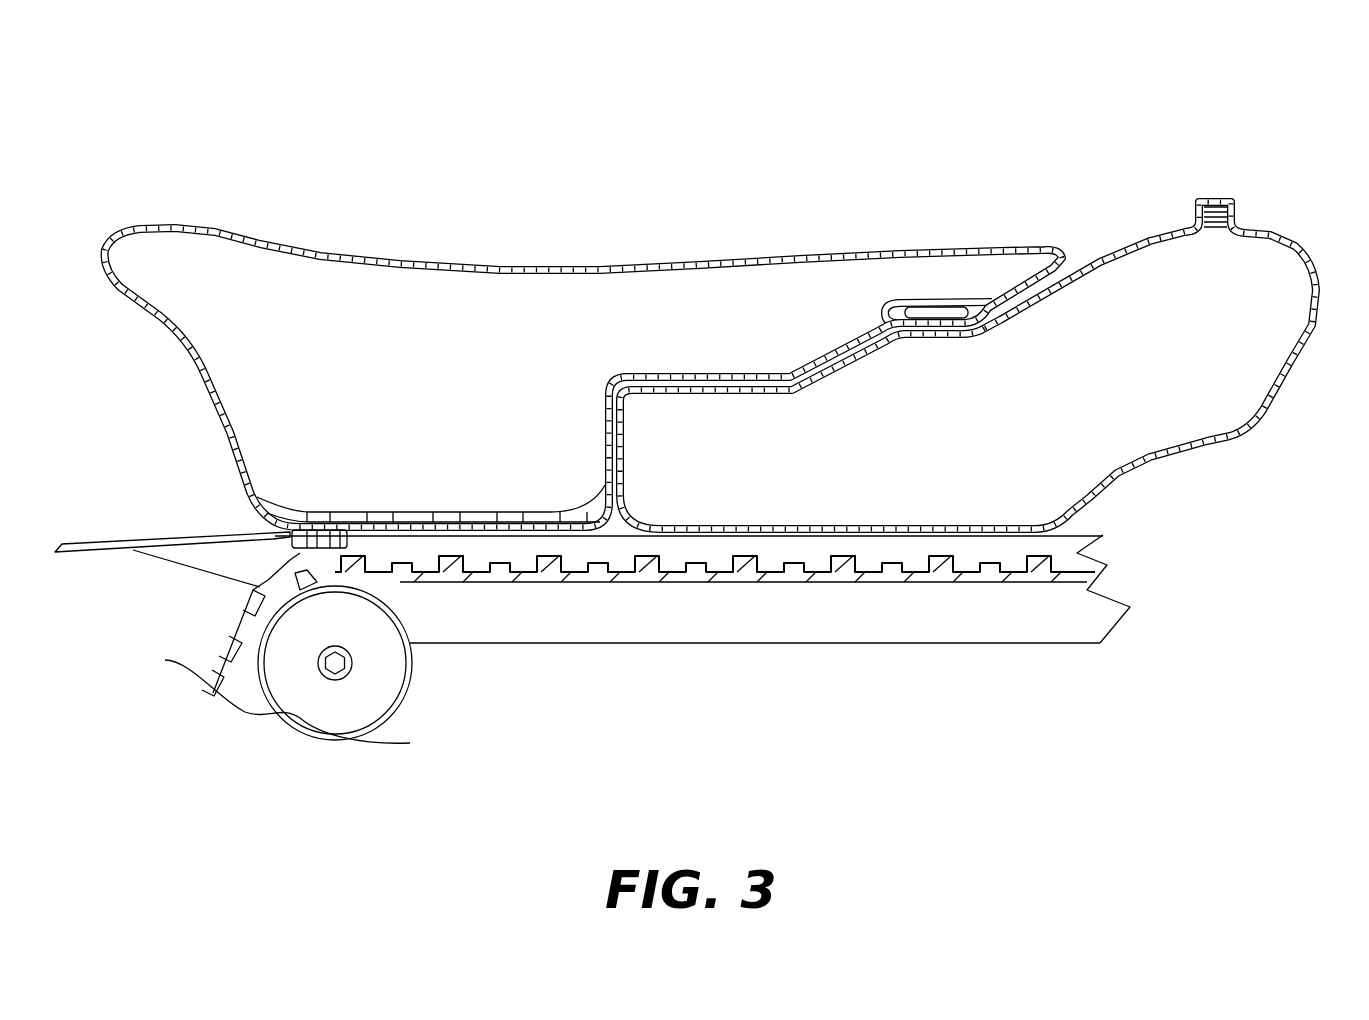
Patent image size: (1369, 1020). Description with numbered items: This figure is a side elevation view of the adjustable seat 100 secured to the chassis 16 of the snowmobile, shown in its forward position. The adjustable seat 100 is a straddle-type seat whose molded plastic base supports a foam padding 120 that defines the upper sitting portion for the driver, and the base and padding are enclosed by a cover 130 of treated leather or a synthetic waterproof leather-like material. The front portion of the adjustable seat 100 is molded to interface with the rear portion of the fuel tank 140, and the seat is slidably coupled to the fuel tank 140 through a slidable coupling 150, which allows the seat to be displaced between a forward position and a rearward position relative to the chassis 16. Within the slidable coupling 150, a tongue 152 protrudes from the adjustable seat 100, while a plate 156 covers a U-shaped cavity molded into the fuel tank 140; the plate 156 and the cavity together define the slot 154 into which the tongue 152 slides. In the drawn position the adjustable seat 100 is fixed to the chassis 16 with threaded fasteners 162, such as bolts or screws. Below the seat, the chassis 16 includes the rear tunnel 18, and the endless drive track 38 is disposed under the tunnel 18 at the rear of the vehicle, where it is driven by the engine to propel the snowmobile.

The adjustable seat 100 is at (737, 290).
The foam padding 120 is at (668, 278).
The cover 130 is at (306, 247).
The fuel tank 140 is at (1257, 388).
The slidable coupling 150 is at (924, 295).
The tongue 152 is at (953, 341).
The slot 154 is at (895, 305).
The plate 156 is at (927, 312).
The chassis 16 is at (588, 610).
The rear tunnel 18 is at (202, 548).
The threaded fasteners 162 is at (273, 555).
The endless drive track 38 is at (487, 585).